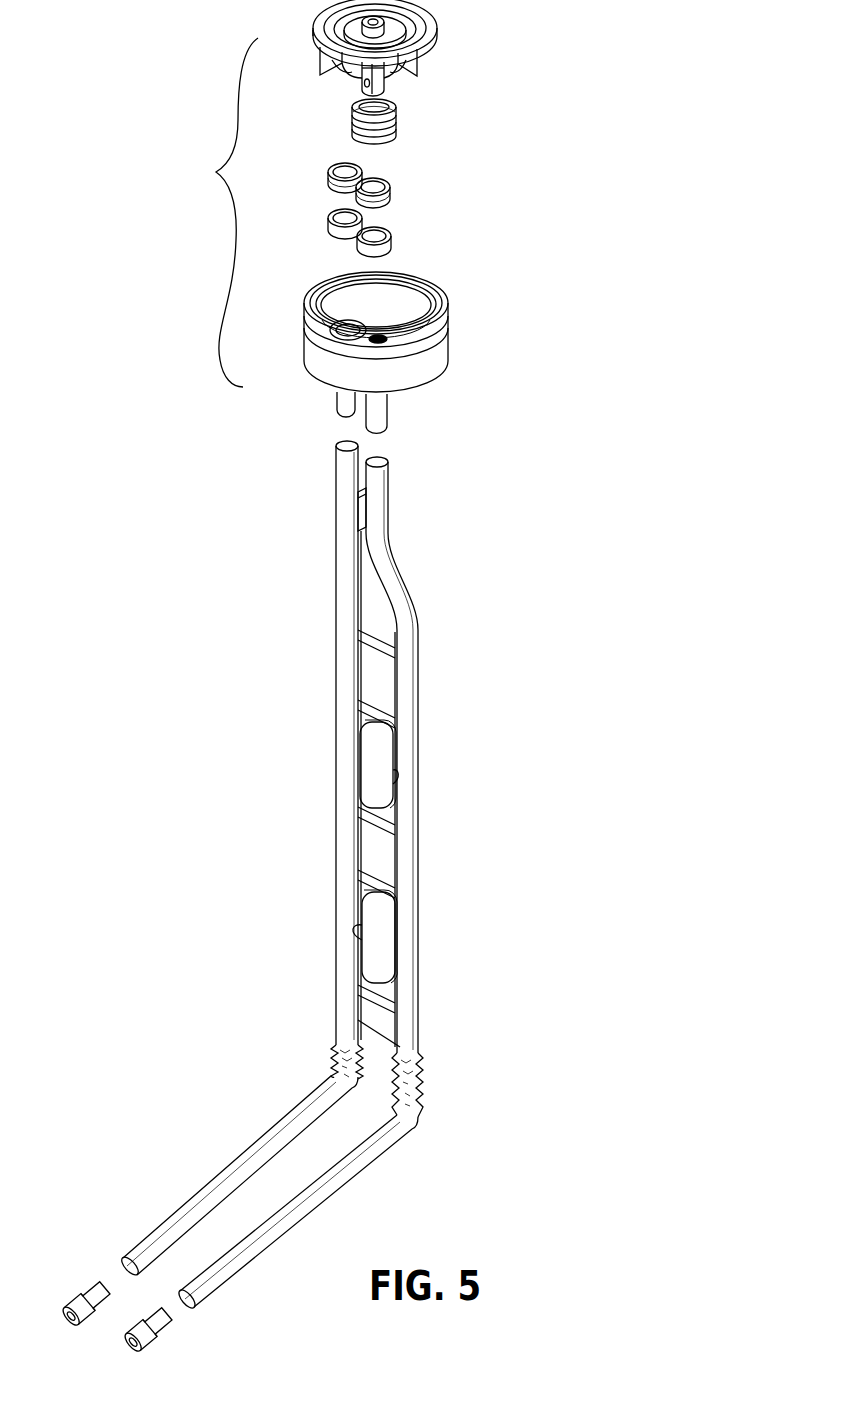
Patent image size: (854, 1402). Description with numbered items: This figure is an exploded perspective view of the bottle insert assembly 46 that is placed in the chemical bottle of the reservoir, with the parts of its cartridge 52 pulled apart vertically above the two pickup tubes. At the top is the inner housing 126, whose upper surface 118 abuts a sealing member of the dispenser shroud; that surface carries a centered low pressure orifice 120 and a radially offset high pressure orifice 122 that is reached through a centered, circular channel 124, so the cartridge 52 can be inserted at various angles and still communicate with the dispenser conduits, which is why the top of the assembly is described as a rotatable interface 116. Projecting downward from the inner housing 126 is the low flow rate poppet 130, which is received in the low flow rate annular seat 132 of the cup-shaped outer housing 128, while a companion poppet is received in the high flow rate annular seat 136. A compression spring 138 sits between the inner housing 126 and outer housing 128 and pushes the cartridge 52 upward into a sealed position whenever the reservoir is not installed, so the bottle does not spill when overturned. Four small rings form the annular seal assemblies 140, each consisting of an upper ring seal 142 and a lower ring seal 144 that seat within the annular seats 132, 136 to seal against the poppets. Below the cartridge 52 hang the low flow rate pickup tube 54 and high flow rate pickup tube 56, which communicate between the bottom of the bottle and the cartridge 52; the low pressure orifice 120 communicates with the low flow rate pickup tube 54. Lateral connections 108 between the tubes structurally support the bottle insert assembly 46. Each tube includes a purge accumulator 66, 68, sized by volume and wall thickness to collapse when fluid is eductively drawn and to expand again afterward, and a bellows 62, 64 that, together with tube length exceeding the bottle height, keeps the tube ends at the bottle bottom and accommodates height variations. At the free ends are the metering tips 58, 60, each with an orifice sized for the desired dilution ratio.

The bottle insert assembly 46 is at (258, 917).
The cartridge 52 is at (213, 173).
The low flow rate pickup tube 54 is at (419, 1020).
The high flow rate pickup tube 56 is at (344, 1008).
The metering tip 58 is at (174, 1326).
The metering tip 60 is at (80, 1290).
The bellows 62 is at (426, 1100).
The bellows 64 is at (329, 1071).
The purge accumulator 66 is at (378, 755).
The purge accumulator 68 is at (383, 946).
The lateral connections 108 is at (385, 520).
The rotatable interface 116 is at (340, 34).
The upper surface 118 is at (428, 8).
The low pressure orifice 120 is at (380, 27).
The high pressure orifice 122 is at (313, 42).
The circular channel 124 is at (340, 58).
The inner housing 126 is at (398, 66).
The outer housing 128 is at (391, 343).
The low flow rate poppet 130 is at (388, 78).
The low flow rate annular seat 132 is at (380, 336).
The high flow rate annular seat 136 is at (331, 332).
The compression spring 138 is at (398, 140).
The annular seal assembly 140 is at (381, 213).
The upper ring seal 142 is at (343, 186).
The lower ring seal 144 is at (342, 236).